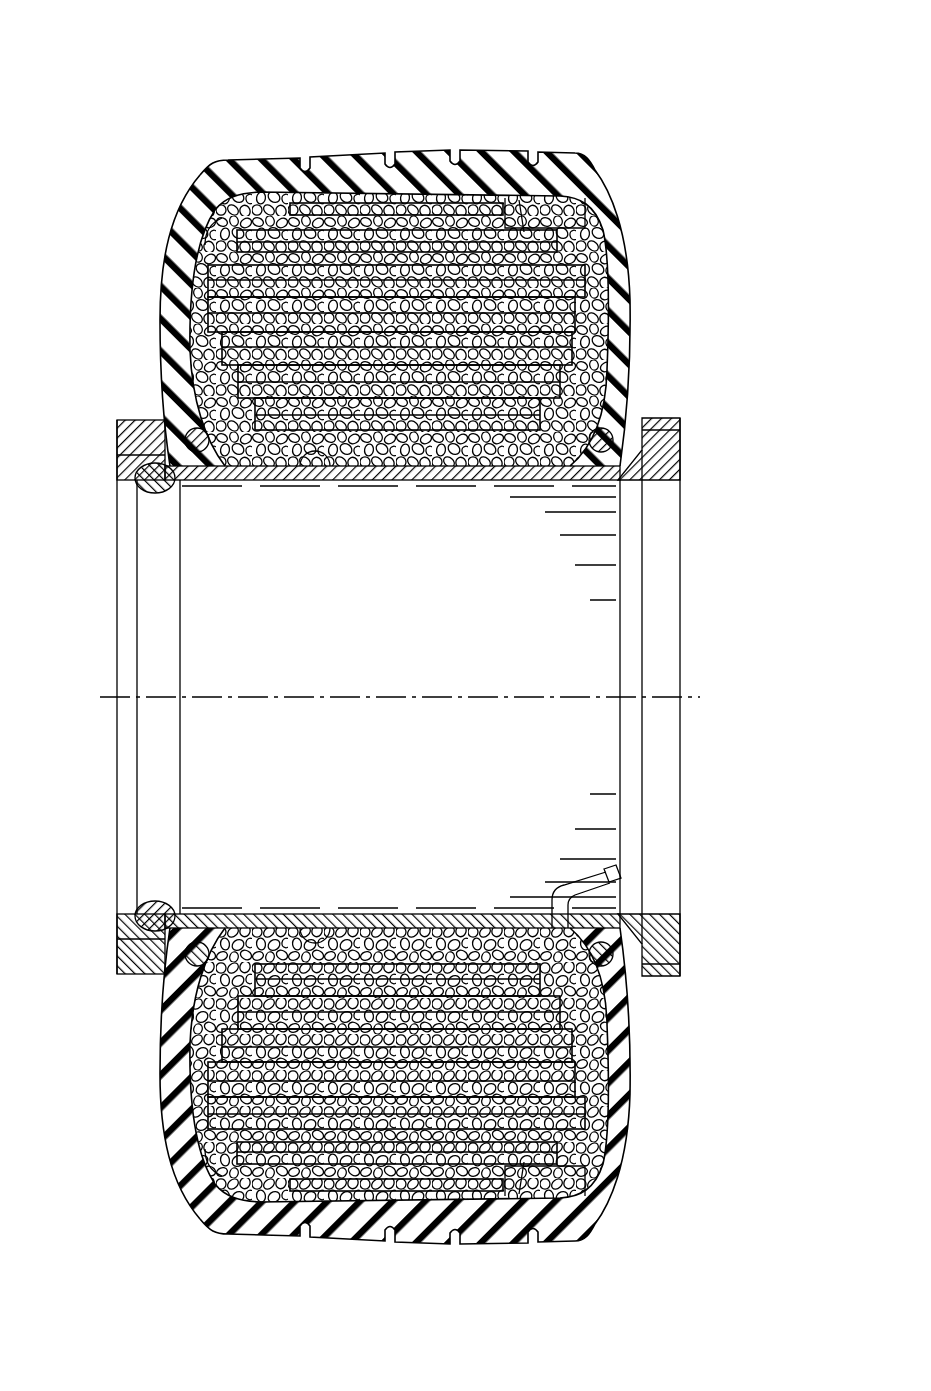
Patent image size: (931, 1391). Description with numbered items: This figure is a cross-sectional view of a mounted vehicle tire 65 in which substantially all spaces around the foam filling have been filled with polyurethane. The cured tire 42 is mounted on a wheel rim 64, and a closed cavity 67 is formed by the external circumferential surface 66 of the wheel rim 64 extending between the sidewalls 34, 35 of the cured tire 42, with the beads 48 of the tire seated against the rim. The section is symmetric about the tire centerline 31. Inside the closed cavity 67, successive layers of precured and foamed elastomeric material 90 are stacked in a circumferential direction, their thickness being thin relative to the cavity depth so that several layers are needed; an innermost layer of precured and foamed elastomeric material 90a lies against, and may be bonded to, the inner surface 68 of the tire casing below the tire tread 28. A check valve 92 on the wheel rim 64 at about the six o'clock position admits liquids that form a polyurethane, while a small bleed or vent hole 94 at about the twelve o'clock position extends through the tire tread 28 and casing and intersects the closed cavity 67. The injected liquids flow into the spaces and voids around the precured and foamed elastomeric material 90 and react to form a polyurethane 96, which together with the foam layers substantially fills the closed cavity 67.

The vehicle tire 65 is at (122, 95).
The cured tire 42 is at (230, 160).
The tire tread 28 is at (345, 152).
The innermost layer of precured and foamed elastomeric material 90a is at (432, 197).
The bleed or vent hole 94 is at (519, 200).
The inner surface of the tire casing 68 is at (545, 215).
The closed cavity 67 is at (207, 235).
The polyurethane 96 is at (570, 240).
The precured and foamed elastomeric material 90 is at (268, 360).
The sidewall 35 is at (165, 340).
The sidewall 34 is at (630, 345).
The beads 48 is at (200, 440).
The wheel rim 64 is at (118, 468).
The external circumferential surface of the wheel rim 66 is at (316, 466).
The tire centerline 31 is at (385, 697).
The check valve 92 is at (590, 878).